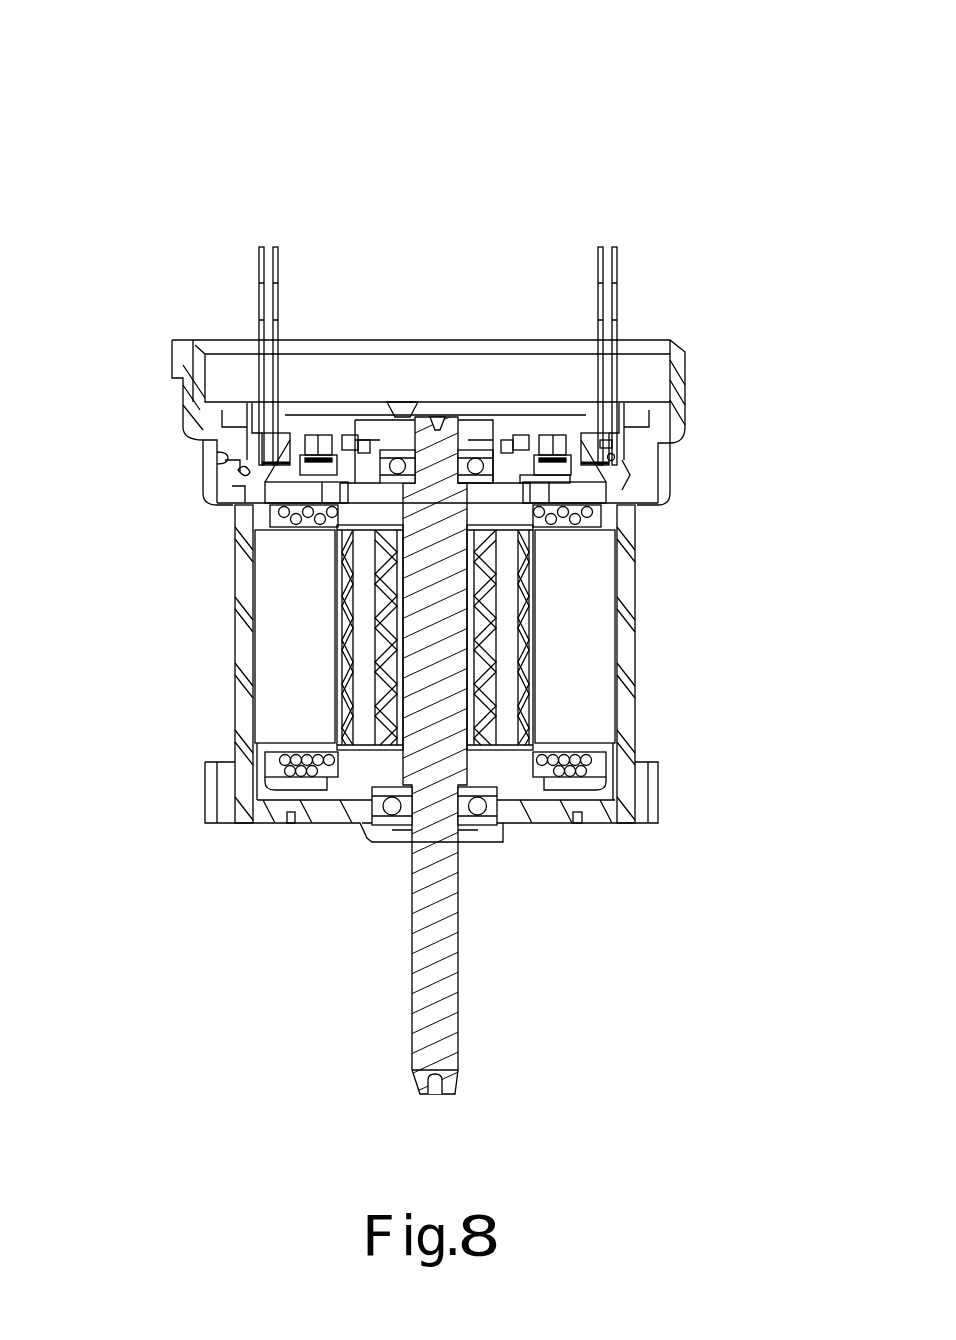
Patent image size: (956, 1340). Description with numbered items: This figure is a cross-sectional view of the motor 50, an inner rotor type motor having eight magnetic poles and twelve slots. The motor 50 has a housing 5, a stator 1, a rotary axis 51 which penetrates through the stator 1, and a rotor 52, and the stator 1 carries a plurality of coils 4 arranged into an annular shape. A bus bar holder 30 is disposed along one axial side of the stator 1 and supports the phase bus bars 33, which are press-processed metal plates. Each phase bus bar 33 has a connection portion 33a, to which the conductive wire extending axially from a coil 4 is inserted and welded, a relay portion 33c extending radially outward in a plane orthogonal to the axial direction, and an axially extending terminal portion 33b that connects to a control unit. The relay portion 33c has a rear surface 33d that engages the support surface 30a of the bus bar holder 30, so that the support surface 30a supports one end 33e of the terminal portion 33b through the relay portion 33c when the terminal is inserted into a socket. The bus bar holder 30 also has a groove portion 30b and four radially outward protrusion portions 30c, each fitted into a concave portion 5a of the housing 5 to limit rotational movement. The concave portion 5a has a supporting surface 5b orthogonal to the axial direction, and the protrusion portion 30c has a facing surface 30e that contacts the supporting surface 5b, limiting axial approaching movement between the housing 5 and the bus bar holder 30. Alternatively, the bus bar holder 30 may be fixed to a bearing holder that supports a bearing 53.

The motor 50 is at (752, 121).
The stator 1 is at (638, 632).
The coil 4 is at (297, 520).
The housing 5 is at (178, 447).
The concave portion 5a is at (222, 456).
The supporting surface 5b is at (243, 475).
The bus bar holder 30 is at (226, 423).
The support surface 30a is at (618, 468).
The groove portion 30b is at (612, 442).
The protrusion portion 30c is at (232, 466).
The facing surface 30e is at (235, 494).
The phase bus bar 33 is at (274, 233).
The connection portion 33a is at (330, 440).
The terminal portion 33b is at (258, 300).
The relay portion 33c is at (310, 436).
The rear surface 33d is at (553, 477).
The one end of the terminal portion 33e is at (614, 457).
The rotary axis 51 is at (443, 968).
The rotor 52 is at (325, 660).
The bearing 53 is at (483, 458).